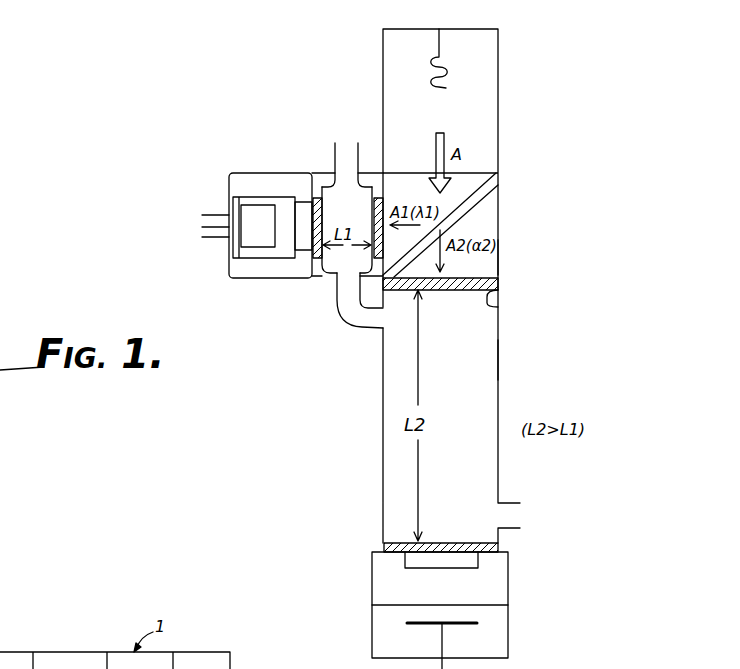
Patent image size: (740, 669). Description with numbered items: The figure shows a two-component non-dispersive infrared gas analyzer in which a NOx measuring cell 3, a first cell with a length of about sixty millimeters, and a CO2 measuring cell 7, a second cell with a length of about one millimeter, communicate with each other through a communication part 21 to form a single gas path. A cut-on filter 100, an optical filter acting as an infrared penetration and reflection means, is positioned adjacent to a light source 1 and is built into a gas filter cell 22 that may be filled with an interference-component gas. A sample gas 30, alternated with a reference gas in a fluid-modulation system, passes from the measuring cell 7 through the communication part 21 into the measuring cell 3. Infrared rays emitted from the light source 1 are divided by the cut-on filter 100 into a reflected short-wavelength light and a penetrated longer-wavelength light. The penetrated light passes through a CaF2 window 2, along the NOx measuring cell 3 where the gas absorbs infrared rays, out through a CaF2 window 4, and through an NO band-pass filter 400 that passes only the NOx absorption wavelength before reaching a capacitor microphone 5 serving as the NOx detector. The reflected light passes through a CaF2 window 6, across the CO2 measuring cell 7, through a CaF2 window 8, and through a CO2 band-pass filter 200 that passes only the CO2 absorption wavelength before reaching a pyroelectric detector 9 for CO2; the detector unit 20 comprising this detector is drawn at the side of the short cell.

The light source 1 is at (498, 62).
The CaF2 window 2 is at (500, 307).
The NOx measuring cell 3 is at (500, 363).
The CaF2 window 4 is at (388, 541).
The capacitor microphone 5 is at (508, 635).
The CaF2 window 6 is at (375, 197).
The CO2 measuring cell 7 is at (327, 280).
The CaF2 window 8 is at (317, 197).
The pyroelectric detector 9 is at (229, 252).
The detector unit 20 is at (234, 202).
The communication part 21 is at (355, 327).
The gas filter cell 22 is at (500, 258).
The sample gas 30 is at (352, 133).
The cut-on filter 100 is at (497, 193).
The CO2 band-pass filter 200 is at (298, 201).
The NO band-pass filter 400 is at (474, 568).